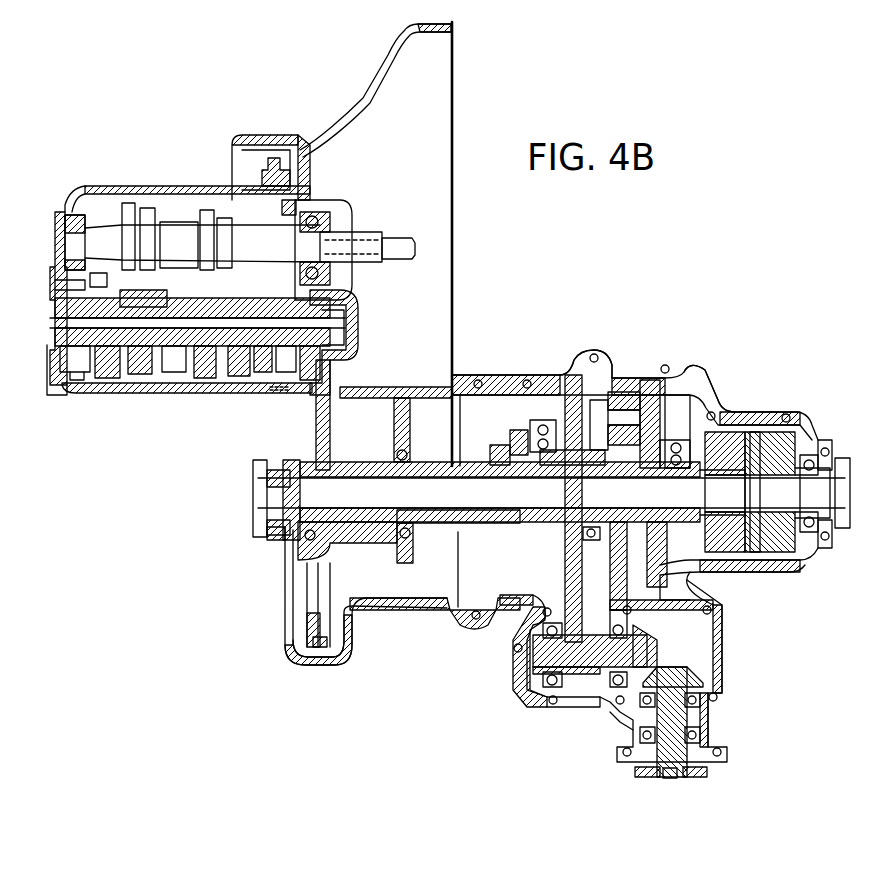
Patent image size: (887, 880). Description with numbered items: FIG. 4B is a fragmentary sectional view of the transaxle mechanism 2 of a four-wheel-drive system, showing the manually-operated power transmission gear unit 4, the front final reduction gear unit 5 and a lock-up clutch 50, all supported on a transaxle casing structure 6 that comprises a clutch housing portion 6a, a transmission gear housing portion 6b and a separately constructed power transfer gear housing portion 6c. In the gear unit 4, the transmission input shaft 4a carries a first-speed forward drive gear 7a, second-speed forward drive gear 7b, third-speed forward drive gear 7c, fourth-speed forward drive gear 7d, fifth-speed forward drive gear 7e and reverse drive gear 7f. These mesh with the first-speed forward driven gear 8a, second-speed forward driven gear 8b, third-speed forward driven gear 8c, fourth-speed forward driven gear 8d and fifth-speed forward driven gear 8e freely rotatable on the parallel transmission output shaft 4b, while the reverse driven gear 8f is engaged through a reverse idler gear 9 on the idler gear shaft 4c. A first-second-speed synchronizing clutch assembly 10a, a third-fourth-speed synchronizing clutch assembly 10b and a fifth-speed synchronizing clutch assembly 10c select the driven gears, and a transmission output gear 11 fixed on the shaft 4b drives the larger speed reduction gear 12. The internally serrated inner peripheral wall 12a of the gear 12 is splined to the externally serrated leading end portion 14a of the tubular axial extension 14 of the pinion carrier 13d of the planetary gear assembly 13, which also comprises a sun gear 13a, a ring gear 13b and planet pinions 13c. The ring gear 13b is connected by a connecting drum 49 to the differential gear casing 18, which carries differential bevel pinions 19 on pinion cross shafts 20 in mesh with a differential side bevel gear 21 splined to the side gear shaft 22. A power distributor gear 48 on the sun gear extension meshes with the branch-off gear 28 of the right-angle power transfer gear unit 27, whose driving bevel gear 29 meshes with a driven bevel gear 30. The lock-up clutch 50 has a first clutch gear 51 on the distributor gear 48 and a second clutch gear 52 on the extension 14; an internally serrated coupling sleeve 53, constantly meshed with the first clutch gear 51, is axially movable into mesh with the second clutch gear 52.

The transaxle mechanism 2 is at (566, 292).
The power transmission gear unit 4 is at (346, 193).
The transmission input shaft 4a is at (362, 248).
The transmission output shaft 4b is at (352, 340).
The idler gear shaft 4c is at (250, 235).
The front final reduction gear unit 5 is at (830, 434).
The transaxle casing structure 6 is at (392, 38).
The clutch housing portion 6a is at (283, 620).
The transmission gear housing portion 6b is at (80, 195).
The power transfer gear housing portion 6c is at (680, 362).
The first-speed forward drive gear 7a is at (288, 212).
The second-speed forward drive gear 7b is at (210, 250).
The third-speed forward drive gear 7c is at (203, 250).
The fourth-speed forward drive gear 7d is at (150, 226).
The fifth-speed forward drive gear 7e is at (113, 212).
The reverse drive gear 7f is at (238, 192).
The first-speed forward driven gear 8a is at (292, 382).
The second-speed forward driven gear 8b is at (236, 372).
The third-speed forward driven gear 8c is at (206, 362).
The fourth-speed forward driven gear 8d is at (142, 366).
The fifth-speed forward driven gear 8e is at (126, 362).
The reverse driven gear 8f is at (226, 362).
The reverse idler gear 9 is at (268, 166).
The first-second-speed synchronizing clutch assembly 10a is at (258, 382).
The third-fourth-speed synchronizing clutch assembly 10b is at (176, 378).
The fifth-speed synchronizing clutch assembly 10c is at (82, 380).
The transmission output gear 11 is at (375, 382).
The speed reduction gear 12 is at (325, 618).
The internally serrated inner peripheral wall 12a is at (418, 480).
The planetary gear assembly 13 is at (592, 352).
The sun gear 13a is at (690, 420).
The ring gear 13b is at (645, 378).
The planet pinions 13c is at (626, 400).
The pinion carrier 13d is at (598, 418).
The tubular axial extension 14 is at (450, 525).
The externally serrated leading end portion 14a is at (392, 525).
The differential gear casing 18 is at (730, 432).
The differential bevel pinions 19 is at (808, 450).
The pinion cross shafts 20 is at (754, 445).
The differential side bevel gear 21 is at (718, 497).
The side gear shaft 22 is at (262, 508).
The right-angle power transfer gear unit 27 is at (608, 724).
The branch-off gear 28 is at (572, 688).
The driving bevel gear 29 is at (652, 658).
The driven bevel gear 30 is at (700, 690).
The power distributor gear 48 is at (548, 356).
The connecting drum 49 is at (680, 402).
The lock-up clutch 50 is at (490, 394).
The first clutch gear 51 is at (542, 422).
The second clutch gear 52 is at (490, 458).
The coupling sleeve 53 is at (516, 430).